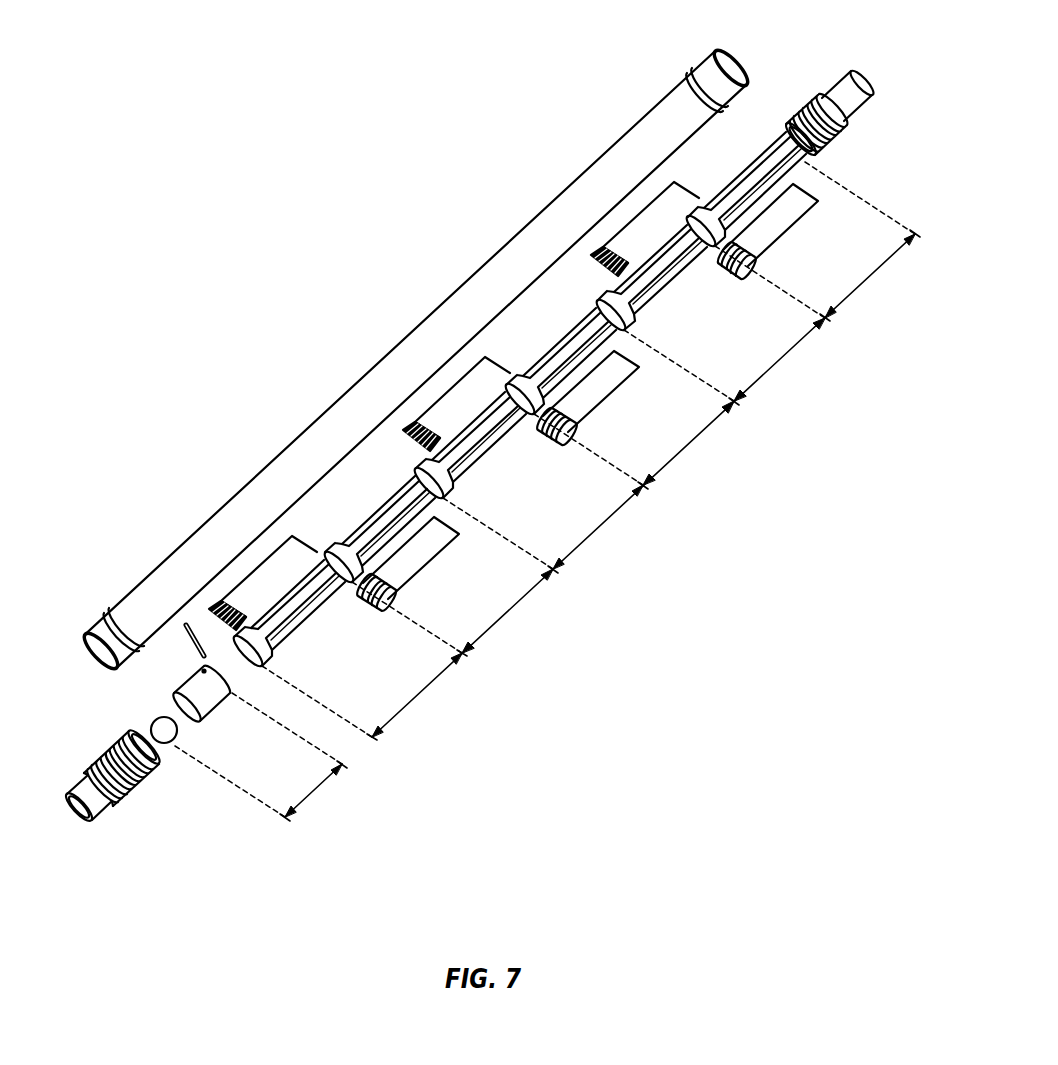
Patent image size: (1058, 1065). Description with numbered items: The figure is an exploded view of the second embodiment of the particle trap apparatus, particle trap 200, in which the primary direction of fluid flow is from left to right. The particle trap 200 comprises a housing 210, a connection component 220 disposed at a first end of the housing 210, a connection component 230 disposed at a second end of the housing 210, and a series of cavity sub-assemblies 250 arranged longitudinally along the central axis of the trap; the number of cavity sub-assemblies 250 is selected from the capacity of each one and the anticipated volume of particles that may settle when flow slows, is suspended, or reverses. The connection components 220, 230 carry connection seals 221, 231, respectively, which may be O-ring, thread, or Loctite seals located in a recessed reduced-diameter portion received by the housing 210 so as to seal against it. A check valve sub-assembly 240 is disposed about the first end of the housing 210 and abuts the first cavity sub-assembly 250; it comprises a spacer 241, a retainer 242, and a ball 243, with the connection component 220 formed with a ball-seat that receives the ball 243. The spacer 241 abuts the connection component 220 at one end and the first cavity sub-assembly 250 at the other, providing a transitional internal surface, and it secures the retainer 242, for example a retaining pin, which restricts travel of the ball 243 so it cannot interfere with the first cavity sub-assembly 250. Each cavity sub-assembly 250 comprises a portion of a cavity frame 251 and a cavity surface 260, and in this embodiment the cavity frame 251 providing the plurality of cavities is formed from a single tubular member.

The particle trap 200 is at (357, 142).
The housing 210 is at (205, 518).
The connection component 220 is at (108, 796).
The connection seal 221 is at (127, 737).
The connection component 230 is at (866, 98).
The connection seal 231 is at (790, 122).
The check valve sub-assembly 240 is at (315, 793).
The spacer 241 is at (207, 723).
The retainer 242 is at (186, 640).
The ball 243 is at (170, 746).
The cavity sub-assembly 250 is at (420, 693).
The cavity frame 251 is at (308, 627).
The cavity surface 260 is at (262, 562).